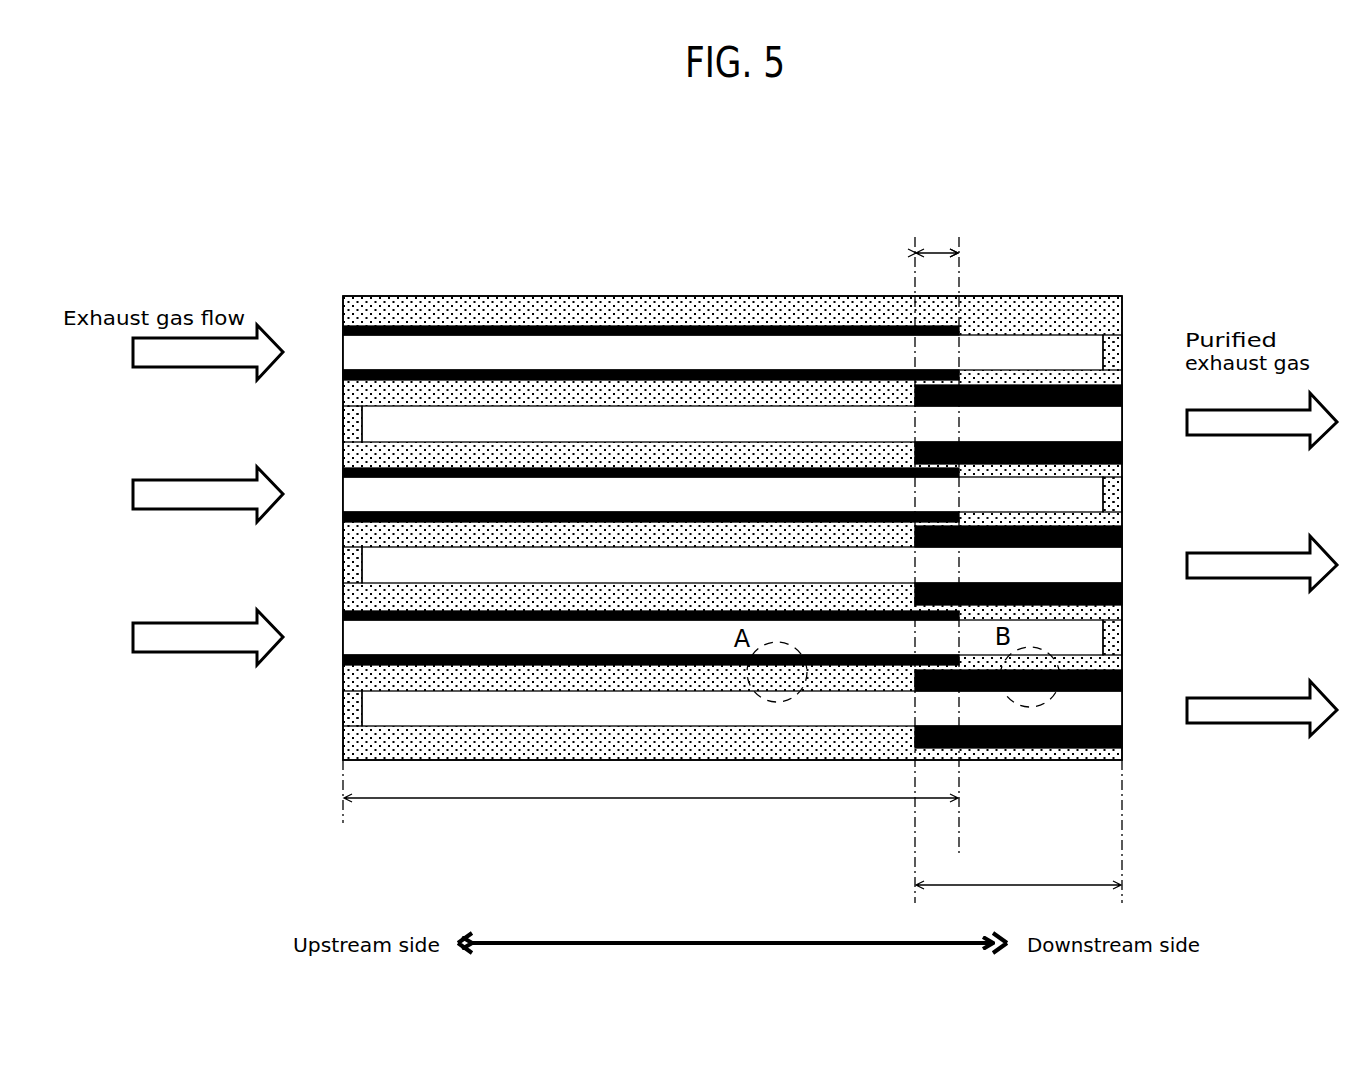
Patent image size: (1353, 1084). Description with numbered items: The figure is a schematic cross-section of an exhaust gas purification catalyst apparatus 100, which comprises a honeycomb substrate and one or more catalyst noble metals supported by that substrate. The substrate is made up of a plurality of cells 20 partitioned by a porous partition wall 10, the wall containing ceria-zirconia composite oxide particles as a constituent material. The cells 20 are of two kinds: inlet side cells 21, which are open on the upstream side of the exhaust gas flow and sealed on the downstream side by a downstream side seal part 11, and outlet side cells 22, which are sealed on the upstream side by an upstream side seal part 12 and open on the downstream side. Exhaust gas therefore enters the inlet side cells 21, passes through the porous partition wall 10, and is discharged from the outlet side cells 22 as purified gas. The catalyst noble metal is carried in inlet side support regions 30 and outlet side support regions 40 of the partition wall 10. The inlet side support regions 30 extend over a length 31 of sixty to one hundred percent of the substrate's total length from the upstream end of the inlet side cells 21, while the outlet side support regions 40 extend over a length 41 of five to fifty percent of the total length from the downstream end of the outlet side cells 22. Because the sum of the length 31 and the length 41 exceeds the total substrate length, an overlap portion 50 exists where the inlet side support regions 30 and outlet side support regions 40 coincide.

The exhaust gas purification catalyst apparatus 100 is at (1086, 180).
The porous partition wall 10 is at (452, 398).
The downstream side seal part 11 is at (1108, 495).
The upstream side seal part 12 is at (350, 567).
The cells 20 is at (732, 434).
The inlet side cells 21 is at (712, 495).
The outlet side cells 22 is at (888, 572).
The inlet side support regions 30 is at (892, 370).
The length of the inlet side support regions 31 is at (651, 815).
The outlet side support regions 40 is at (1113, 680).
The length of the outlet side support regions 41 is at (1018, 871).
The overlap portion 50 is at (937, 236).